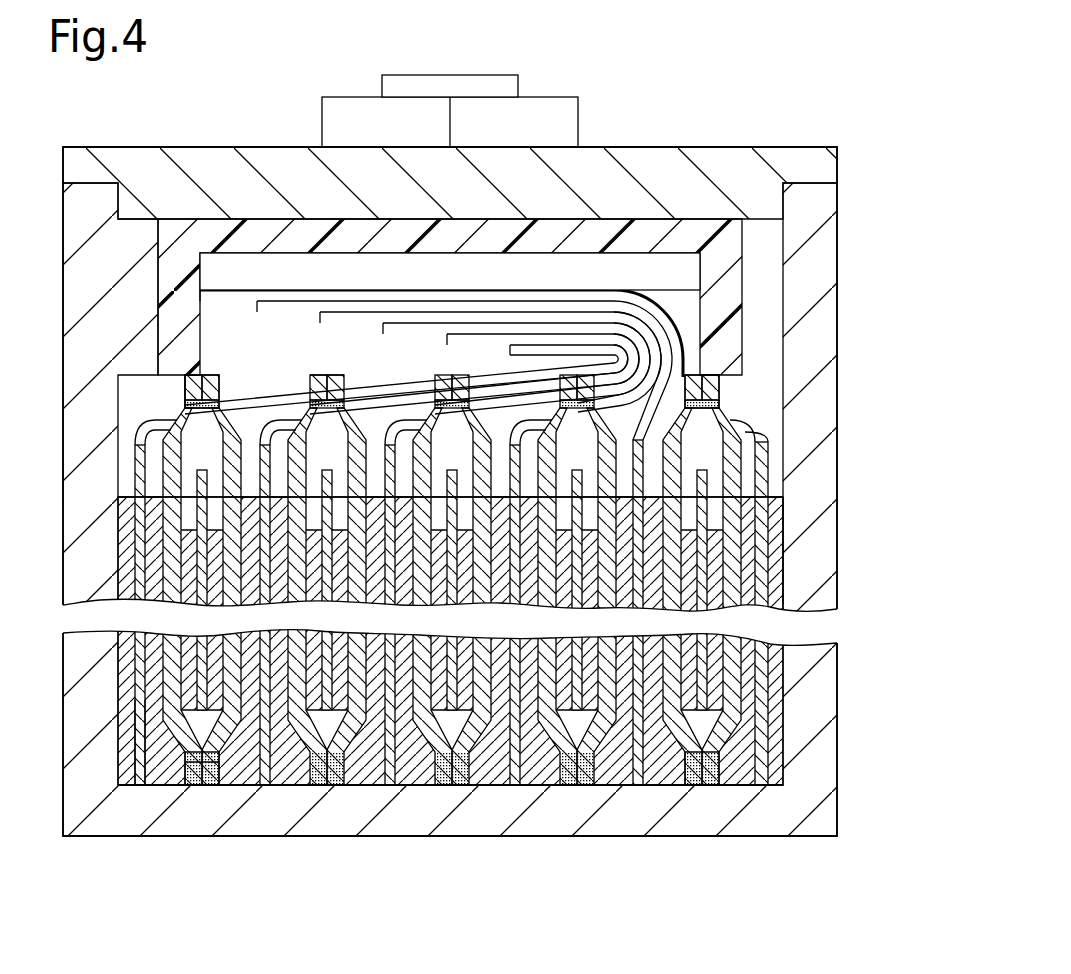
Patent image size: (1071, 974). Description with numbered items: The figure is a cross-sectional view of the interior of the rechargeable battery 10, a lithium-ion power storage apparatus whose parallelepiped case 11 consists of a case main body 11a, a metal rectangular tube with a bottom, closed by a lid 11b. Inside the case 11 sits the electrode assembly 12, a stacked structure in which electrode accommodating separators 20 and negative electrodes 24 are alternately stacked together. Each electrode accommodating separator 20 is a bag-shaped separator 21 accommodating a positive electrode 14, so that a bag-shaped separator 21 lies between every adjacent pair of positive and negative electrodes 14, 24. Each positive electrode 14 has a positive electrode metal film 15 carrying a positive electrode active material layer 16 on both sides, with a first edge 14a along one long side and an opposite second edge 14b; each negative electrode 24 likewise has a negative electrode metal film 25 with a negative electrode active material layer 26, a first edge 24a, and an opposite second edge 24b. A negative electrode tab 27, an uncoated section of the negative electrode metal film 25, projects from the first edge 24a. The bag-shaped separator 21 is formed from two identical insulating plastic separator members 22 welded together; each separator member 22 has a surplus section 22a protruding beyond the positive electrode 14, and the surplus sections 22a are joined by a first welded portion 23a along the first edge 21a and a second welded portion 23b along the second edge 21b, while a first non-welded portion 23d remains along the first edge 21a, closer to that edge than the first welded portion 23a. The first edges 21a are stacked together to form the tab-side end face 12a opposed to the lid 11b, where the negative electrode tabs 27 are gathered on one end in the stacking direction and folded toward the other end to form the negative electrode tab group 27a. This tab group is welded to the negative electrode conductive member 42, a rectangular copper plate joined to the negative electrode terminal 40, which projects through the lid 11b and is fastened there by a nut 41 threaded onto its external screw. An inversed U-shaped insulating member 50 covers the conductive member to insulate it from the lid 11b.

The rechargeable battery 10 is at (821, 113).
The case 11 is at (120, 103).
The case main body 11a is at (63, 207).
The lid 11b is at (63, 163).
The electrode assembly 12 is at (792, 560).
The tab-side end face 12a is at (318, 374).
The positive electrode 14 is at (760, 535).
The first edge 14a is at (760, 500).
The second edge 14b is at (712, 727).
The positive electrode metal film 15 is at (700, 575).
The positive electrode active material layer 16 is at (715, 598).
The electrode accommodating separator 20 is at (133, 453).
The bag-shaped separator 21 is at (190, 487).
The first edge 21a is at (208, 374).
The second edge 21b is at (188, 785).
The separator member 22 is at (218, 389).
The surplus section 22a is at (185, 408).
The first welded portion 23a is at (185, 396).
The second welded portion 23b is at (197, 785).
The first non-welded portion 23d is at (185, 378).
The negative electrode 24 is at (125, 522).
The first edge 24a is at (133, 432).
The second edge 24b is at (132, 785).
The negative electrode metal film 25 is at (133, 547).
The negative electrode active material layer 26 is at (152, 590).
The negative electrode tab 27 is at (378, 395).
The negative electrode tab group 27a is at (440, 287).
The negative electrode terminal 40 is at (520, 80).
The nut 41 is at (345, 97).
The negative electrode conductive member 42 is at (246, 270).
The insulating member 50 is at (640, 235).